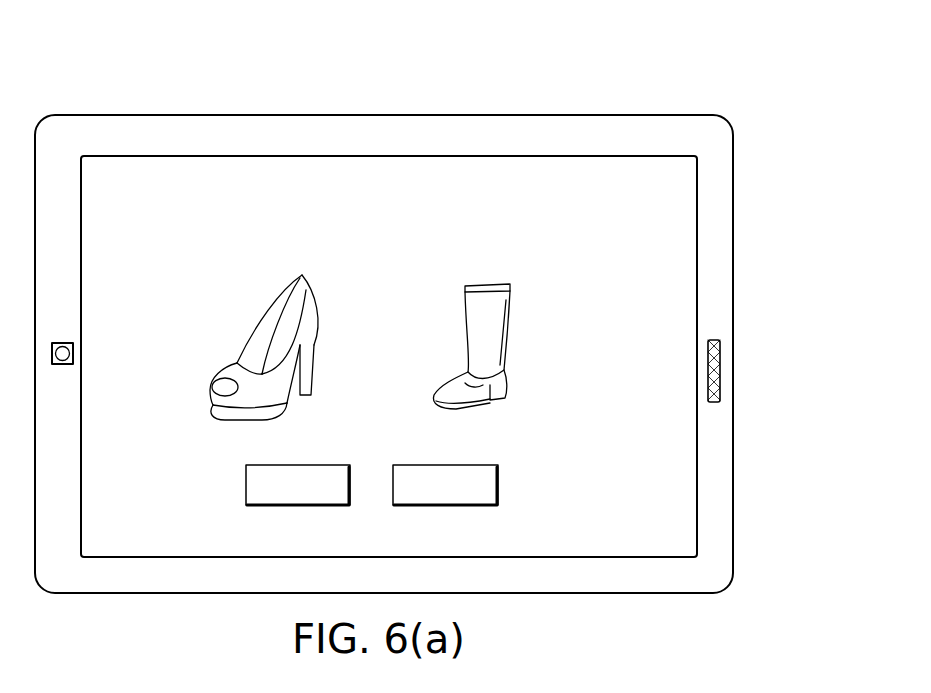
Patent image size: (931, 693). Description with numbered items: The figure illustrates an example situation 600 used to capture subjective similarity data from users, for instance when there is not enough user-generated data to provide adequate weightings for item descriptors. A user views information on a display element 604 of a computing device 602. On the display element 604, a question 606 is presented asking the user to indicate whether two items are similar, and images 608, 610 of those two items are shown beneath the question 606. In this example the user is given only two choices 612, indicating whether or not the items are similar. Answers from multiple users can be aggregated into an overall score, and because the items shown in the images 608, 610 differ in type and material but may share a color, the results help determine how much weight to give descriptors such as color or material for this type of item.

The example situation 600 is at (784, 146).
The computing device 602 is at (189, 115).
The display element 604 is at (447, 155).
The question 606 is at (527, 222).
The image 608 is at (229, 340).
The image 610 is at (537, 335).
The choices 612 is at (535, 493).